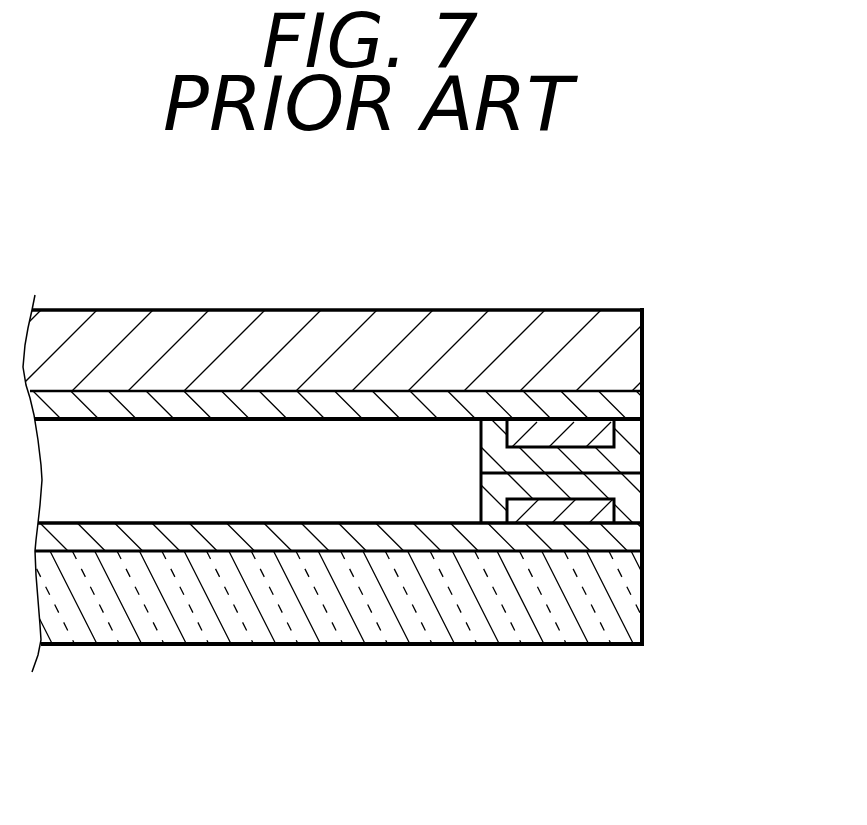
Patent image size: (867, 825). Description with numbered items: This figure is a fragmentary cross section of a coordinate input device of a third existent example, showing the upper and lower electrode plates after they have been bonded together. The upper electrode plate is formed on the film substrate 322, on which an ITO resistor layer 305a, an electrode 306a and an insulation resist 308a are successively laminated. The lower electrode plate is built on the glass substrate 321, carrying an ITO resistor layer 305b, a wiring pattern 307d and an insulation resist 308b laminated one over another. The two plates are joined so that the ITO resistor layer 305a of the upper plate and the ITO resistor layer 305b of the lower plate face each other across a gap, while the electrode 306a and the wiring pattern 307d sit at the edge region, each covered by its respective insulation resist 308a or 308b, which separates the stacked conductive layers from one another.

The film substrate 322 is at (643, 317).
The ITO resistor layer 305a is at (643, 394).
The electrode 306a is at (643, 425).
The insulation resist 308a is at (643, 447).
The insulation resist 308b is at (643, 485).
The wiring pattern 307d is at (643, 512).
The ITO resistor layer 305b is at (643, 540).
The glass substrate 321 is at (643, 625).